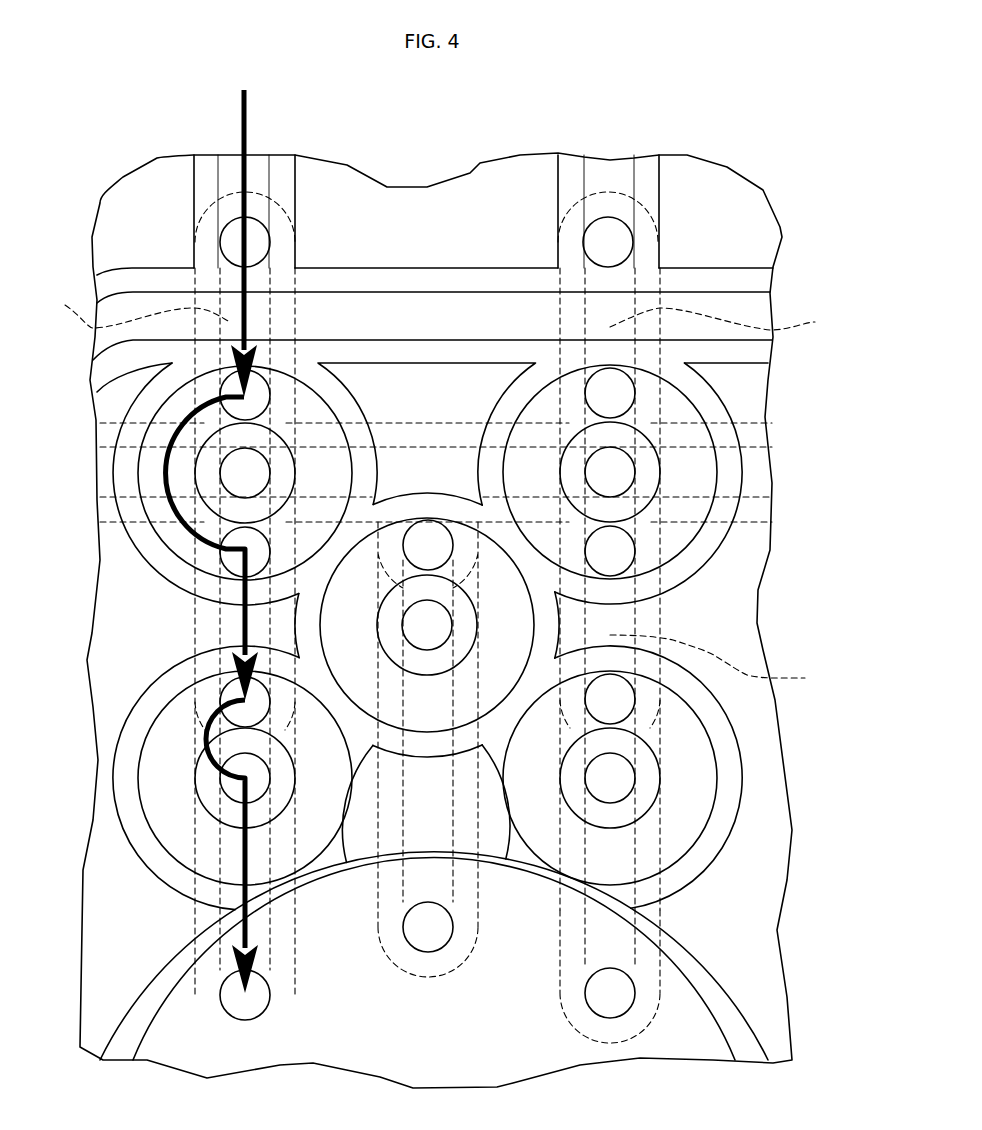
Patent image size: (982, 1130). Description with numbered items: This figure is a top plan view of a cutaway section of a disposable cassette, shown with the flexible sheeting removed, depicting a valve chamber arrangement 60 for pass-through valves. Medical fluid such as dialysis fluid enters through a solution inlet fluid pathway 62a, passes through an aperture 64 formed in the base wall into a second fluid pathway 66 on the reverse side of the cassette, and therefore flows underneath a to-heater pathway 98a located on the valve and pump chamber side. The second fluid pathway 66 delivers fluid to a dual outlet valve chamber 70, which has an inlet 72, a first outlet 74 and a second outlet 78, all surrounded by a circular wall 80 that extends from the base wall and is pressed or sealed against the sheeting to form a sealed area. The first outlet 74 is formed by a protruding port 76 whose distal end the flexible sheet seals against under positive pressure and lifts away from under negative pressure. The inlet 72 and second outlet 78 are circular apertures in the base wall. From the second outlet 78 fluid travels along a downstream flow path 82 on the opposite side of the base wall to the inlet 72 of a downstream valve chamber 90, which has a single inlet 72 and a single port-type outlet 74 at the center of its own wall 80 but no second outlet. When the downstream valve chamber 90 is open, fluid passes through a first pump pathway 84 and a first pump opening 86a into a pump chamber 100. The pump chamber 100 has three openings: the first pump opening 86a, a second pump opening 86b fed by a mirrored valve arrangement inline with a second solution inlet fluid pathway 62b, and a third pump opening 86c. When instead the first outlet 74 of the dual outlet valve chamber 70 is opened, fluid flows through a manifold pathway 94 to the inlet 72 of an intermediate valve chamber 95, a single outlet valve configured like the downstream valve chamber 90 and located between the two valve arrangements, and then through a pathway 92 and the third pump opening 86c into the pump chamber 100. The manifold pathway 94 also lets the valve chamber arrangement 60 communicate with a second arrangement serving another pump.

The valve chamber arrangement 60 is at (628, 127).
The solution inlet fluid pathway 62a is at (607, 173).
The second solution inlet fluid pathway 62b is at (260, 165).
The aperture 64 is at (258, 240).
The second fluid pathway 66 is at (441, 310).
The dual outlet valve chamber 70 is at (138, 566).
The inlet 72 is at (235, 395).
The first outlet 74 is at (238, 475).
The port 76 is at (210, 485).
The second outlet 78 is at (235, 560).
The wall 80 is at (647, 582).
The downstream flow path 82 is at (722, 662).
The first pump pathway 84 is at (613, 945).
The first pump opening 86a is at (595, 1002).
The second pump opening 86b is at (262, 1002).
The third pump opening 86c is at (443, 933).
The downstream valve chamber 90 is at (166, 894).
The pathway 92 is at (415, 826).
The manifold pathway 94 is at (465, 468).
The intermediate valve chamber 95 is at (339, 633).
The to-heater pathway 98a is at (416, 333).
The pump chamber 100 is at (417, 1048).